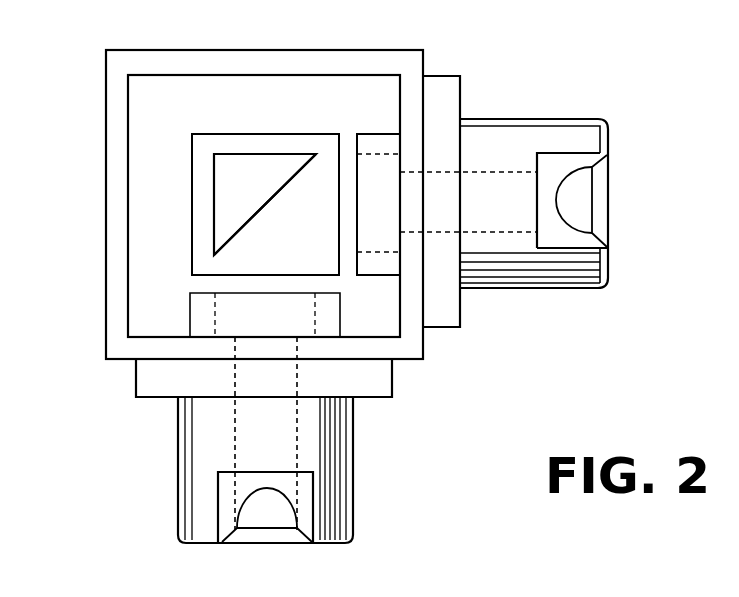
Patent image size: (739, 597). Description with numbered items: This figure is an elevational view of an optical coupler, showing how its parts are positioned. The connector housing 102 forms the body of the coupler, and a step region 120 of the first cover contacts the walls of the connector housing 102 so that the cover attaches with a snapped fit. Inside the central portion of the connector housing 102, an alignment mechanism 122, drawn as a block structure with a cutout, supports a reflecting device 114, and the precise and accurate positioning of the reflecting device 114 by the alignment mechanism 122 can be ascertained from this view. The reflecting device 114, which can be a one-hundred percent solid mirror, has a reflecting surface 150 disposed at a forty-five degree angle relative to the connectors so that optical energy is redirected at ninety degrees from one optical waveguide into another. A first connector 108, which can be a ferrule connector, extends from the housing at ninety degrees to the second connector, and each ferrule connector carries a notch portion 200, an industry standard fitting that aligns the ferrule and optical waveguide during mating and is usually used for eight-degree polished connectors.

The connector housing 102 is at (352, 62).
The first connector 108 is at (520, 119).
The reflecting device 114 is at (232, 153).
The step region 120 is at (153, 97).
The alignment mechanism 122 is at (192, 222).
The reflecting surface 150 is at (260, 210).
The notch portion 200 is at (556, 205).